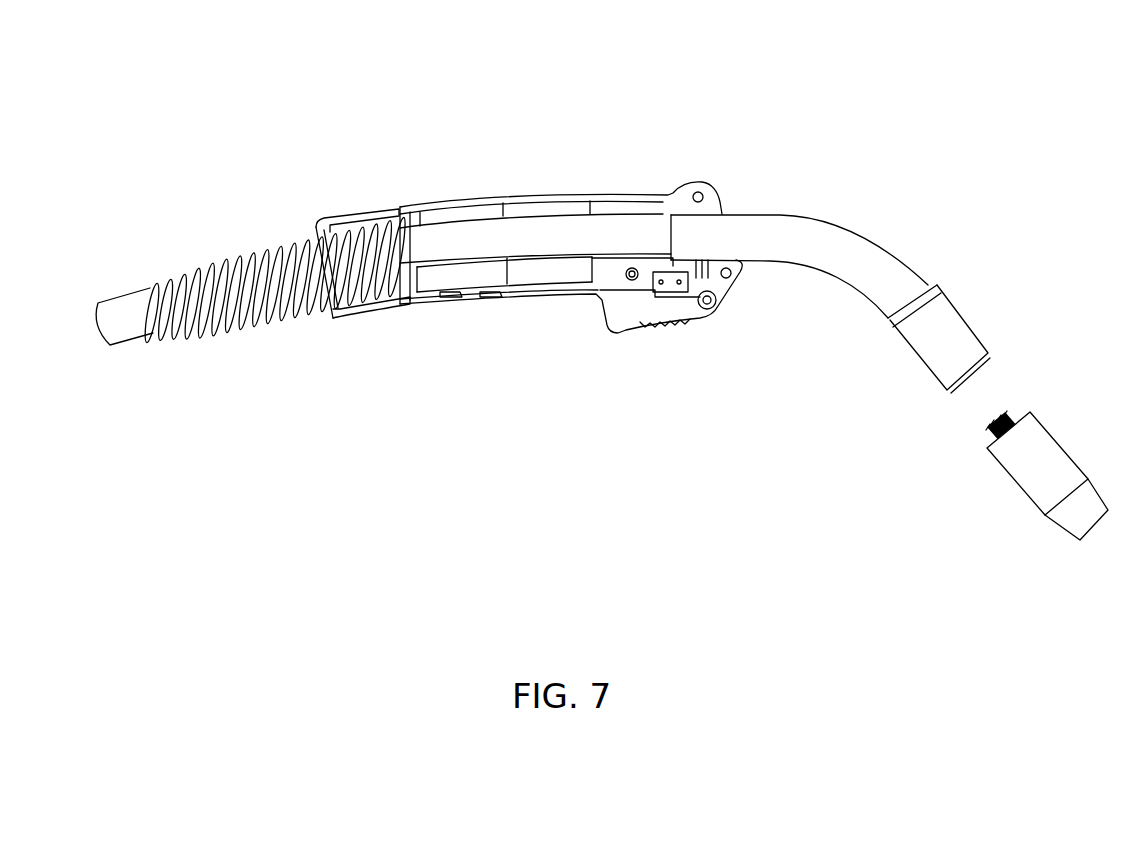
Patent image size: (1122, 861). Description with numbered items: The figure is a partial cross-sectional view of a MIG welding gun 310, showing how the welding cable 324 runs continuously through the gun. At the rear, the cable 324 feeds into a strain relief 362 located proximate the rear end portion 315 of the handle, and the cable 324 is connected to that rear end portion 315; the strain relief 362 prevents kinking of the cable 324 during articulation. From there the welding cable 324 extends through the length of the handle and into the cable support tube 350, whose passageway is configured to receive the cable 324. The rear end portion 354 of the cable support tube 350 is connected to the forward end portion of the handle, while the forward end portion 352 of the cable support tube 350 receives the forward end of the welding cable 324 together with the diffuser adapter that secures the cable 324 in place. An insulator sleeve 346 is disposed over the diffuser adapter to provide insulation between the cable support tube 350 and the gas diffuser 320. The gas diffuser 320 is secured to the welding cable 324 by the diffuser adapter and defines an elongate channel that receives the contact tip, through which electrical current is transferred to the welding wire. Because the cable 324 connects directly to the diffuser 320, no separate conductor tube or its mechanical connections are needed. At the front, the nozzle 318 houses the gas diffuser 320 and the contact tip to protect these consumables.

The MIG welding gun 310 is at (549, 106).
The rear end portion of the handle 315 is at (332, 218).
The welding cable 324 is at (536, 238).
The rear end portion of the cable support tube 354 is at (810, 214).
The cable support tube 350 is at (932, 284).
The forward end portion of the cable support tube 352 is at (917, 357).
The insulator sleeve 346 is at (947, 392).
The gas diffuser 320 is at (1012, 410).
The nozzle 318 is at (1030, 500).
The strain relief 362 is at (230, 340).